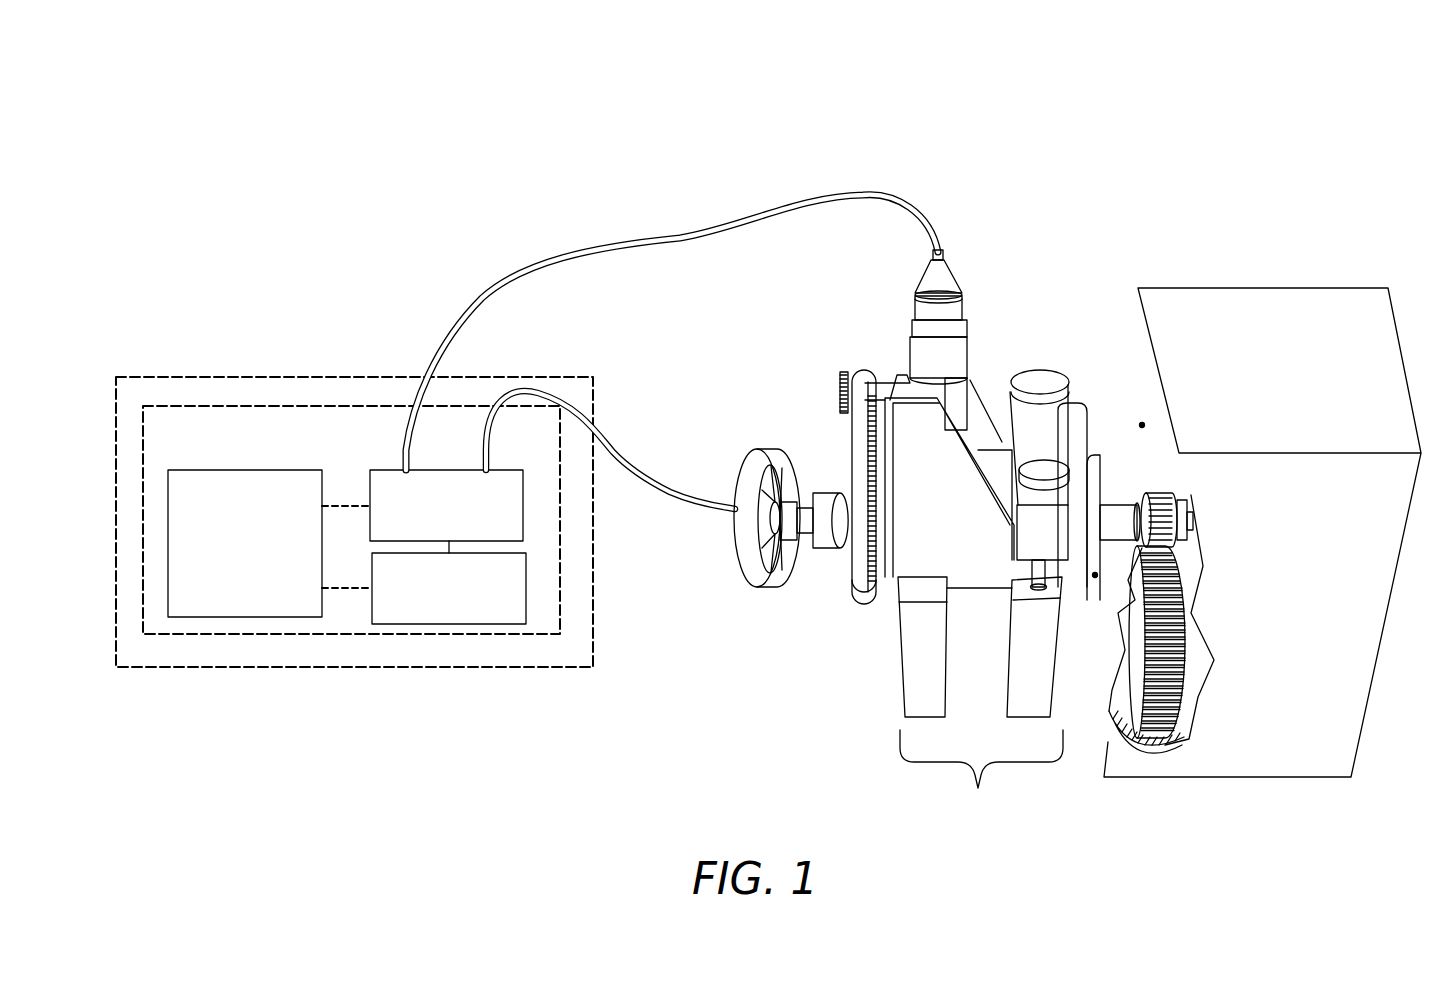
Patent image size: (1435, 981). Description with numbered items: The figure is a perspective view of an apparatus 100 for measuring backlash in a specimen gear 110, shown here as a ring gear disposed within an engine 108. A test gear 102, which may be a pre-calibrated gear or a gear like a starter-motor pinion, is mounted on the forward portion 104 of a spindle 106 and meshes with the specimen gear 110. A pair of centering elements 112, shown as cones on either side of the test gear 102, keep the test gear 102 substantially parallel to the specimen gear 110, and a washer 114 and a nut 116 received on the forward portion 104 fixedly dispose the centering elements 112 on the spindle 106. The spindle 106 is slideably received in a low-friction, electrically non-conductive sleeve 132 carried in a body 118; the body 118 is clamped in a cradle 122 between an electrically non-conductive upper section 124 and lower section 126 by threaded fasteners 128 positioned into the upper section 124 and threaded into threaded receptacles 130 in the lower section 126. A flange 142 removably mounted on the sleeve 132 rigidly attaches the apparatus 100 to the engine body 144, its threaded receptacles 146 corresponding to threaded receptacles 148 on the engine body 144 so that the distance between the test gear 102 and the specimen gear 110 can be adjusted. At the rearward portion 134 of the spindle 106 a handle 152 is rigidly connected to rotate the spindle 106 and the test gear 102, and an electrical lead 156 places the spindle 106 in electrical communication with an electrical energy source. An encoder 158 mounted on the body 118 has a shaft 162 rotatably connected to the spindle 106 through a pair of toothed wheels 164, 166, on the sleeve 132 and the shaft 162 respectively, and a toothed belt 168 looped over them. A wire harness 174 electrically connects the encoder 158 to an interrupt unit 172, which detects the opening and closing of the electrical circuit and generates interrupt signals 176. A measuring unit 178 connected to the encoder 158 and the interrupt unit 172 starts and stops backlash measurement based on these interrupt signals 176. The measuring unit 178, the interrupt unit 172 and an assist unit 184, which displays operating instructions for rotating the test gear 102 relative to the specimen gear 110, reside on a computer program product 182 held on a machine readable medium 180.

The apparatus 100 is at (1313, 120).
The test gear 102 is at (1165, 492).
The forward portion 104 is at (1123, 517).
The spindle 106 is at (806, 485).
The engine 108 is at (1405, 298).
The specimen gear 110 is at (1163, 705).
The centering elements 112 is at (1130, 545).
The washer 114 is at (1184, 514).
The nut 116 is at (1189, 521).
The body 118 is at (972, 560).
The cradle 122 is at (981, 779).
The upper section 124 is at (1037, 423).
The lower section 126 is at (940, 677).
The threaded fasteners 128 is at (1035, 380).
The threaded receptacles 130 is at (1013, 580).
The sleeve 132 is at (800, 568).
The rearward portion 134 is at (773, 550).
The flange 142 is at (1088, 427).
The engine body 144 is at (1301, 609).
The threaded receptacles 146 is at (1077, 428).
The threaded receptacles 148 is at (1142, 422).
The handle 152 is at (747, 548).
The electrical lead 156 is at (637, 467).
The encoder 158 is at (947, 353).
The shaft 162 is at (880, 390).
The toothed wheel 164 is at (843, 370).
The toothed wheel 166 is at (877, 592).
The toothed belt 168 is at (868, 593).
The interrupt unit 172 is at (457, 515).
The wire harness 174 is at (592, 250).
The interrupt signals 176 is at (346, 506).
The measuring unit 178 is at (464, 598).
The machine readable medium 180 is at (175, 403).
The computer program product 182 is at (205, 451).
The assist unit 184 is at (256, 554).